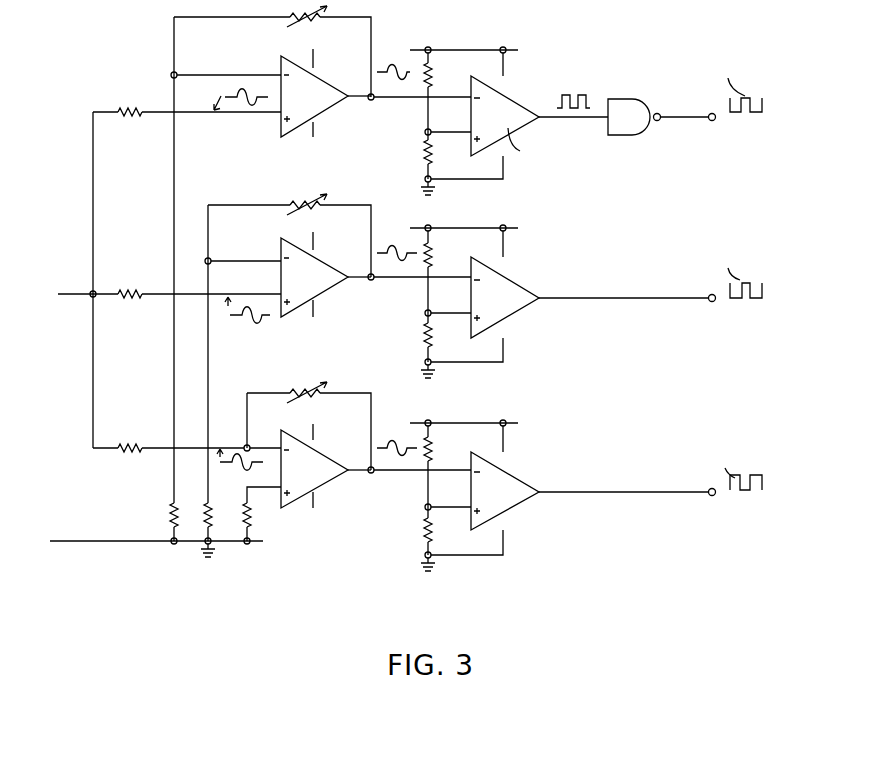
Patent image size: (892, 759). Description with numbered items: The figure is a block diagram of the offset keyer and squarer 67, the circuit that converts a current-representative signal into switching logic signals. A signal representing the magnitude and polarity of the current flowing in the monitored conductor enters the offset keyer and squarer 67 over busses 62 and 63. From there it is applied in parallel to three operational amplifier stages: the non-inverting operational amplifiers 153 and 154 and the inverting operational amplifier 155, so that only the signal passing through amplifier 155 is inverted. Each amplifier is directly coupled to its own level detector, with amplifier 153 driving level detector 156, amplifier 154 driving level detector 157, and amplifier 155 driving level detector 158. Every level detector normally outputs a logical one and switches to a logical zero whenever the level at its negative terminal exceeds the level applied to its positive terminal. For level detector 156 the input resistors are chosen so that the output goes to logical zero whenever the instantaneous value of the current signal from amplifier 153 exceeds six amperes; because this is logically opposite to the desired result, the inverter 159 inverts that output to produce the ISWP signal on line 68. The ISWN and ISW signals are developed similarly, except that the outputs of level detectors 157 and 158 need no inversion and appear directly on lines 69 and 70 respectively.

The bus 62 is at (88, 292).
The bus 63 is at (70, 540).
The offset keyer and squarer 67 is at (397, 318).
The line 68 is at (708, 114).
The line 69 is at (708, 296).
The line 70 is at (709, 491).
The non-inverting operational amplifier 153 is at (335, 101).
The non-inverting operational amplifier 154 is at (332, 280).
The inverting operational amplifier 155 is at (332, 483).
The level detector 156 is at (517, 107).
The level detector 157 is at (520, 290).
The level detector 158 is at (518, 482).
The inverter 159 is at (633, 98).